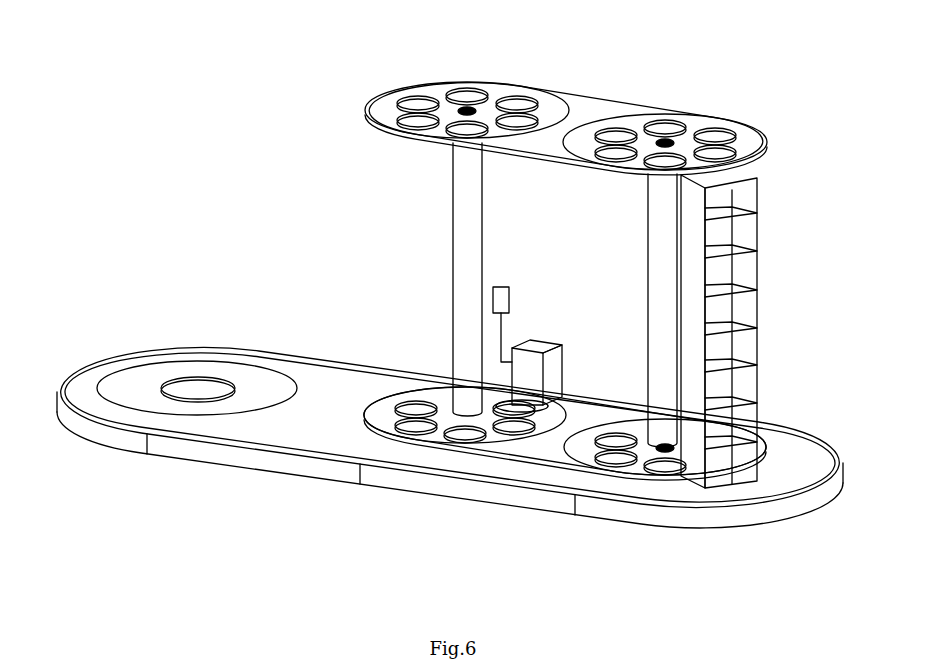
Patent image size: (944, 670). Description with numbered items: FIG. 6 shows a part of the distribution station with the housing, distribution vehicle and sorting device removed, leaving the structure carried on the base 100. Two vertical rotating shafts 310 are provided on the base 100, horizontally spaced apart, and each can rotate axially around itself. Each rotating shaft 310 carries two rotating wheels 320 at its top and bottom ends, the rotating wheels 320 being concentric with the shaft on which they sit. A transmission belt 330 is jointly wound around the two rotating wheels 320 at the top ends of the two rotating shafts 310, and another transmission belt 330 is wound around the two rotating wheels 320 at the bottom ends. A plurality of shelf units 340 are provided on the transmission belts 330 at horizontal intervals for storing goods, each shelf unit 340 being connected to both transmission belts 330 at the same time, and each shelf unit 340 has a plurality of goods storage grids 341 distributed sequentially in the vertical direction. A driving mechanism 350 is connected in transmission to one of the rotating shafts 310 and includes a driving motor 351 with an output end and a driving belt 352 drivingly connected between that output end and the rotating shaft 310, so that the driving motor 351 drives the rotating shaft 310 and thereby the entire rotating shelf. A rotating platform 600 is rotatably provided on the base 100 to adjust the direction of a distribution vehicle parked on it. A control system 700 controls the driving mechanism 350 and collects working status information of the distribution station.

The base 100 is at (233, 457).
The rotating platform 600 is at (150, 378).
The rotating shaft 310 is at (463, 197).
The rotating wheel 320 is at (440, 97).
The transmission belt 330 is at (607, 98).
The shelf unit 340 is at (758, 352).
The goods storage grid 341 is at (730, 473).
The driving mechanism 350 is at (560, 330).
The driving motor 351 is at (529, 340).
The driving belt 352 is at (552, 358).
The control system 700 is at (498, 288).